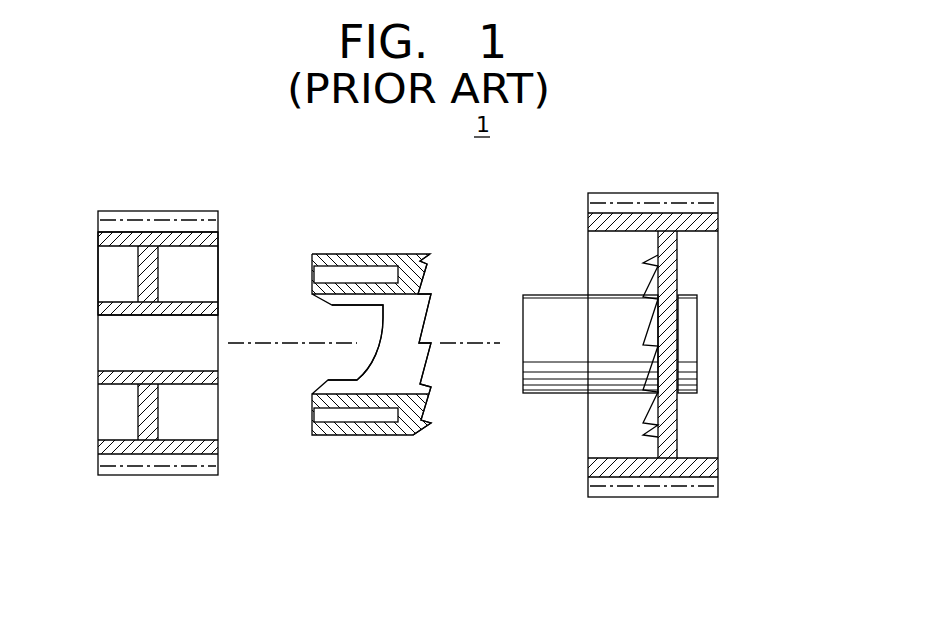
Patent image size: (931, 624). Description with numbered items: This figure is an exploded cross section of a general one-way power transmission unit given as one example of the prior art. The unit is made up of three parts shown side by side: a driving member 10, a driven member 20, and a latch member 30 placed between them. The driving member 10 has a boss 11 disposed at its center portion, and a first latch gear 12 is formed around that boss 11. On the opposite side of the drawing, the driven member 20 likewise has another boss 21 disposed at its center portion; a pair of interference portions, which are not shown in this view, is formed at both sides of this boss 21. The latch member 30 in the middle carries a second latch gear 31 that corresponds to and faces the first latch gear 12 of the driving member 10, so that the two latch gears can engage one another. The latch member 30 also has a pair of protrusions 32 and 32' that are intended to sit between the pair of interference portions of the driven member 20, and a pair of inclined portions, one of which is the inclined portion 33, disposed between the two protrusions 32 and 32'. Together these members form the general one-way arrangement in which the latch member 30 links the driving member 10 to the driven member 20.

The driving member 10 is at (731, 219).
The boss 11 is at (540, 303).
The first latch gear 12 is at (650, 287).
The driven member 20 is at (103, 484).
The boss 21 is at (205, 307).
The latch member 30 is at (383, 452).
The second latch gear 31 is at (432, 278).
The protrusion 32 is at (371, 310).
The protrusion 32' is at (371, 381).
The inclined portion 33 is at (357, 380).